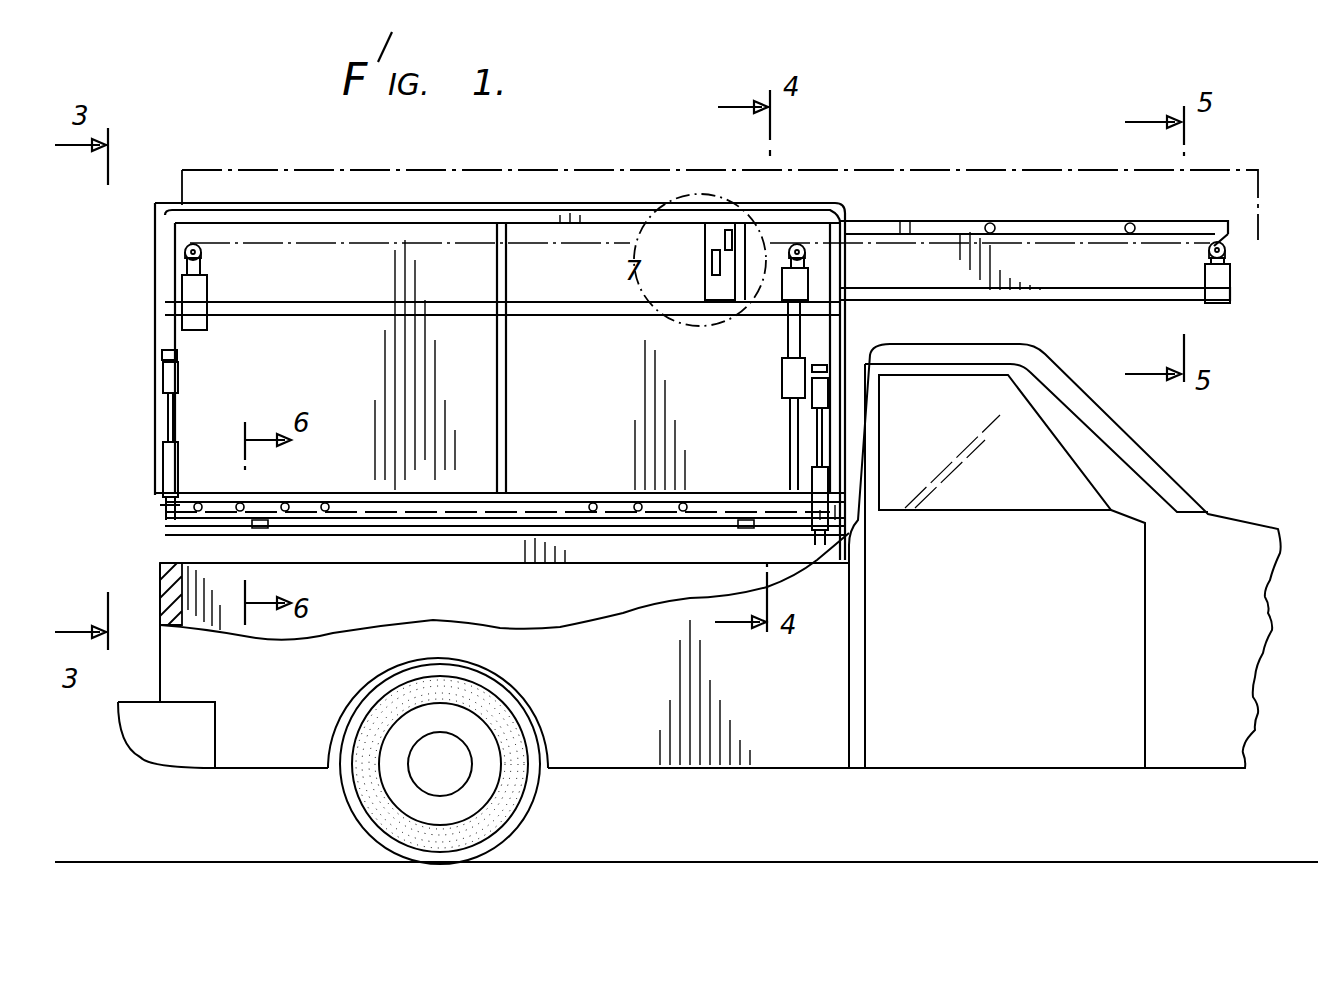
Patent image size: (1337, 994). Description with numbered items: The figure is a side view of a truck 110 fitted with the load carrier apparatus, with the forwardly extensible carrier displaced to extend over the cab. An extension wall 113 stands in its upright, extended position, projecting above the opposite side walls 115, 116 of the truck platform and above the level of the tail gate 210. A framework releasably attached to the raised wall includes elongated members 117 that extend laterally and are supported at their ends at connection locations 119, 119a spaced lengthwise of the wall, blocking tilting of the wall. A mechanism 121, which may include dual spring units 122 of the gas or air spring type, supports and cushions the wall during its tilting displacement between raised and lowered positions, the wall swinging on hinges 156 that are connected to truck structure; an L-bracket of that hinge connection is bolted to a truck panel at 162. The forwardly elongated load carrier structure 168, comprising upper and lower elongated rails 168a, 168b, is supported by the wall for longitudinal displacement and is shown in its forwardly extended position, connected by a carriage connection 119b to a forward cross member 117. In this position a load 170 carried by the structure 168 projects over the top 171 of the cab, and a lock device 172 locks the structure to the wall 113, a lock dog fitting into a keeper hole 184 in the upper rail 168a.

The truck 110 is at (1238, 486).
The extension wall 113 is at (682, 484).
The side wall 115 is at (369, 611).
The side wall 116 is at (588, 688).
The elongated member 117 is at (185, 253).
The connection location 119 is at (182, 290).
The connection location 119a is at (808, 282).
The carriage connection 119b is at (1232, 282).
The mechanism 121 is at (764, 347).
The spring unit 122 is at (216, 430).
The hinge 156 is at (430, 490).
The bolt location 162 is at (262, 520).
The load carrier structure 168 is at (962, 200).
The upper rail 168a is at (1190, 221).
The lower rail 168b is at (1072, 302).
The load 170 is at (872, 155).
The cab top 171 is at (918, 344).
The lock device 172 is at (705, 232).
The keeper hole 184 is at (1128, 225).
The tail gate 210 is at (160, 578).